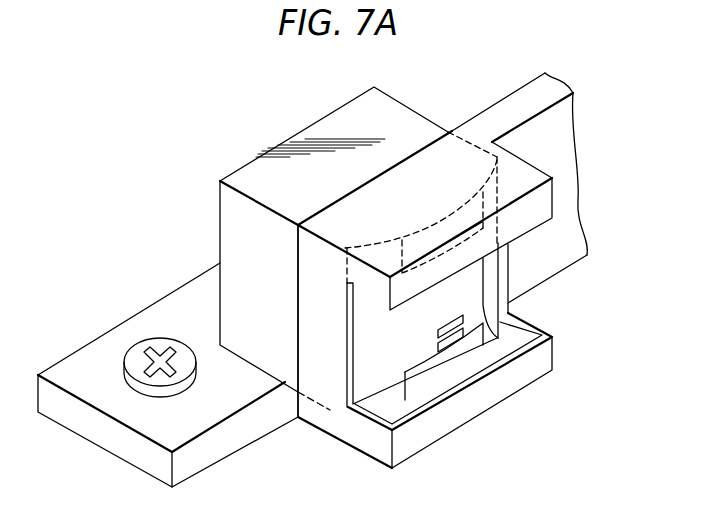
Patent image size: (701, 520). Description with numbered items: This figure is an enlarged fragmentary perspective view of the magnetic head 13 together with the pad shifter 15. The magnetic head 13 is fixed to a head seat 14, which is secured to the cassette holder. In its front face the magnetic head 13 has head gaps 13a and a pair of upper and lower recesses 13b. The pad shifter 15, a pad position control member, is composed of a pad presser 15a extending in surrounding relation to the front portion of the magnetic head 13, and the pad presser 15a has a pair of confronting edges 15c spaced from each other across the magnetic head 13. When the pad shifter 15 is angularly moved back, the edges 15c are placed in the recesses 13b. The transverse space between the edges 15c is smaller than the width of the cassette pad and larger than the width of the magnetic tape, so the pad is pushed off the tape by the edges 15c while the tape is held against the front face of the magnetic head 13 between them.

The magnetic head 13 is at (328, 135).
The head gaps 13a is at (460, 332).
The recesses 13b is at (423, 240).
The head seat 14 is at (175, 308).
The pad shifter 15 is at (493, 122).
The pad presser 15a is at (543, 364).
The edges 15c is at (533, 212).